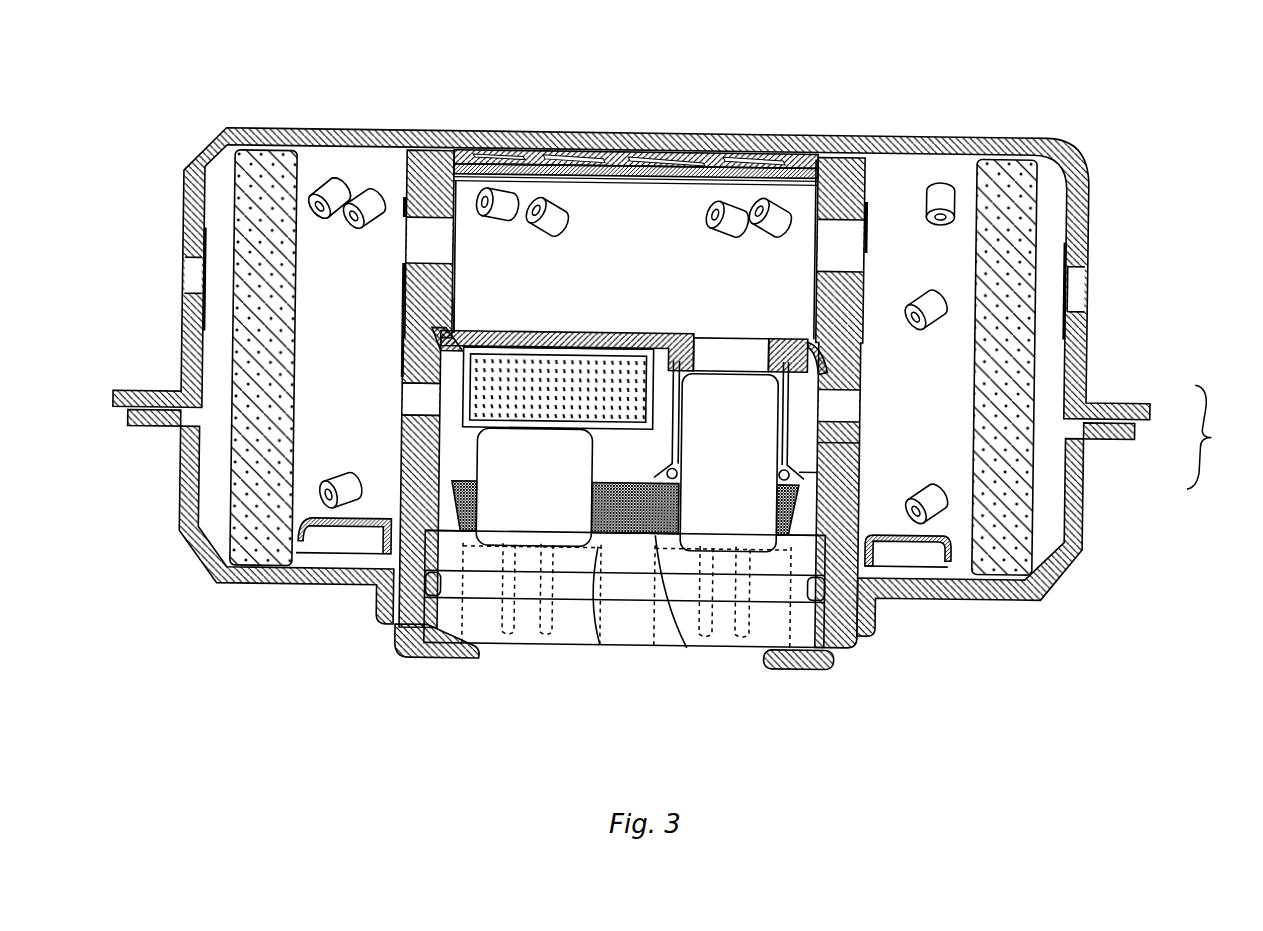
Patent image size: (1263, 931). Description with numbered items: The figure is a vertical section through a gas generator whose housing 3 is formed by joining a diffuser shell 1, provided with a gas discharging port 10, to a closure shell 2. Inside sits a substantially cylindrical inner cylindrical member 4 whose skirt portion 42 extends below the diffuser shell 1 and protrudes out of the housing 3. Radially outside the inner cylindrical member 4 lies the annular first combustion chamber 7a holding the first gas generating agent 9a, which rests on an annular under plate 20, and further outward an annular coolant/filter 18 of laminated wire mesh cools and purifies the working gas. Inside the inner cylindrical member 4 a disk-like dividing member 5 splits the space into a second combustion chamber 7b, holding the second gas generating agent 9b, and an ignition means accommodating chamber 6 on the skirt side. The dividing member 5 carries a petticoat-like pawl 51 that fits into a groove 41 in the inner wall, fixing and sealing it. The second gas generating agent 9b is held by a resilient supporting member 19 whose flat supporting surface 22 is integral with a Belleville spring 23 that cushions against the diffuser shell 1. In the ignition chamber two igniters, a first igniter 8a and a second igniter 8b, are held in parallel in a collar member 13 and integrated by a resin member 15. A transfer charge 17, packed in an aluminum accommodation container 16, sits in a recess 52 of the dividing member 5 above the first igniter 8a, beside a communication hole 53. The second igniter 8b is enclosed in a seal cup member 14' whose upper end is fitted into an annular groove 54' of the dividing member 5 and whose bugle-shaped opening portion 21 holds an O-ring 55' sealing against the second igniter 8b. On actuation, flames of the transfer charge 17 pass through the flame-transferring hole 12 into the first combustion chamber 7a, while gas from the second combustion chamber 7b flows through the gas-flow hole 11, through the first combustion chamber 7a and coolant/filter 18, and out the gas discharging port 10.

The diffuser shell 1 is at (1083, 388).
The closure shell 2 is at (1083, 469).
The housing 3 is at (1211, 437).
The inner cylindrical member 4 is at (832, 180).
The dividing member 5 is at (580, 333).
The ignition means accommodating chamber 6 is at (694, 649).
The first combustion chamber 7a is at (359, 343).
The second combustion chamber 7b is at (643, 230).
The first igniter 8a is at (516, 499).
The second igniter 8b is at (711, 499).
The first gas generating agent 9a is at (324, 190).
The second gas generating agent 9b is at (491, 172).
The gas discharging port 10 is at (1080, 286).
The gas-flow hole 11 is at (401, 245).
The flame-transferring hole 12 is at (394, 437).
The collar member 13 is at (636, 637).
The seal cup member 14' is at (800, 421).
The resin member 15 is at (602, 555).
The accommodation container 16 is at (398, 405).
The transfer charge 17 is at (544, 409).
The coolant/filter 18 is at (231, 233).
The resilient supporting member 19 is at (637, 102).
The under plate 20 is at (915, 552).
The opening portion 21 is at (826, 447).
The supporting surface 22 is at (678, 152).
The Belleville spring 23 is at (707, 72).
The groove 41 is at (455, 310).
The skirt portion 42 is at (486, 655).
The pawl 51 is at (460, 337).
The recess 52 is at (540, 335).
The communication hole 53 is at (703, 342).
The annular groove 54' is at (749, 313).
The O-ring 55' is at (867, 467).